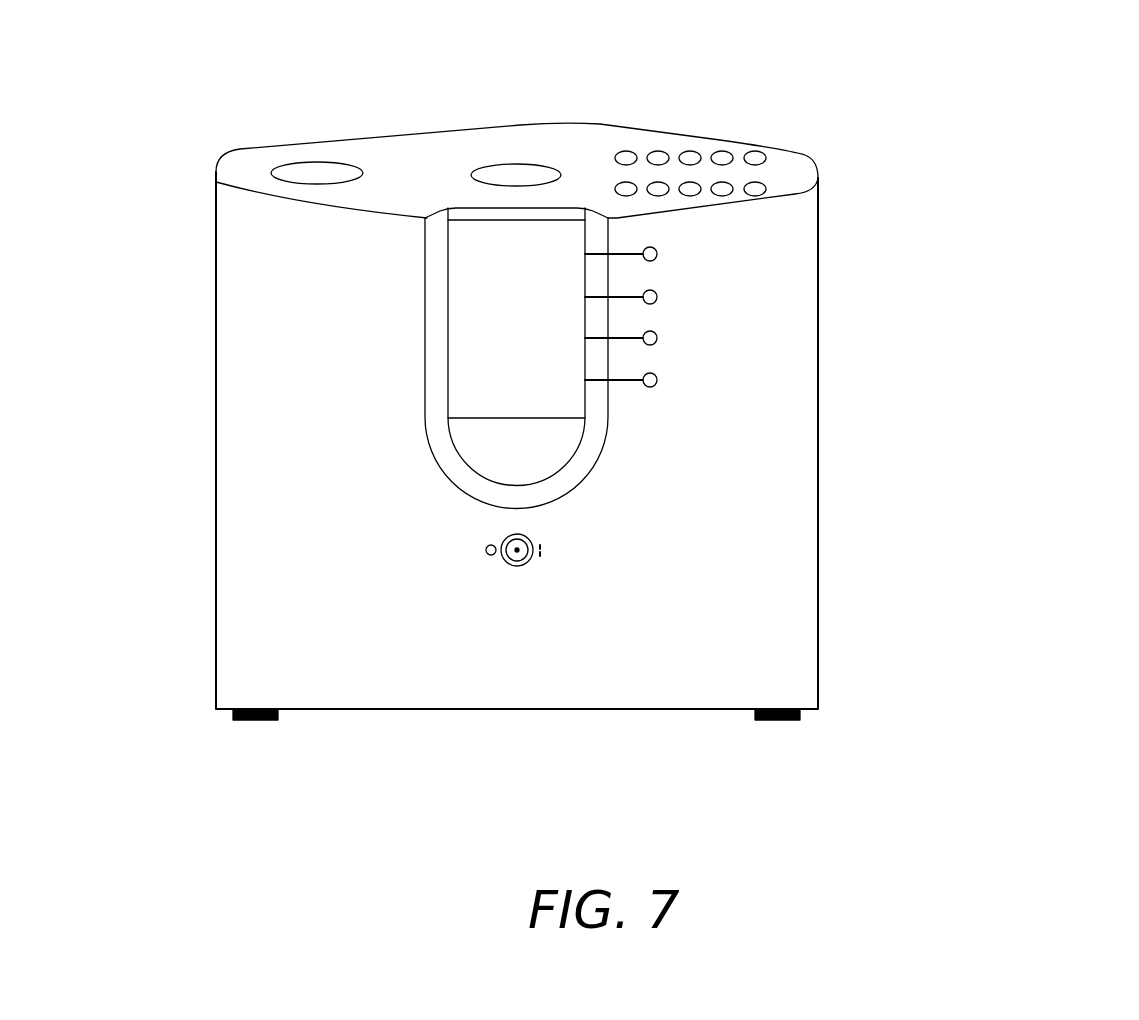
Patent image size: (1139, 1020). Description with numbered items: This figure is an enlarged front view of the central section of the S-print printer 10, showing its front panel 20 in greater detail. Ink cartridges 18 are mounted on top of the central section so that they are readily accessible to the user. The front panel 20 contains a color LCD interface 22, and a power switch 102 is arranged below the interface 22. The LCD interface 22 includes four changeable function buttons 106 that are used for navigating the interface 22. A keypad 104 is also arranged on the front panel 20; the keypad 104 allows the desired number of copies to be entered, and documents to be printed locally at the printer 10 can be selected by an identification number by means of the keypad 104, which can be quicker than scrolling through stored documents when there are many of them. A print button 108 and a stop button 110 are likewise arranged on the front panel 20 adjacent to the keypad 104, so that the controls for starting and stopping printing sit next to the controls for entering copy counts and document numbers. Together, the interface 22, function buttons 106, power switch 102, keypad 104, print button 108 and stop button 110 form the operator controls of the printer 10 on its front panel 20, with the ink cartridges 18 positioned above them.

The S-print printer 10 is at (982, 348).
The ink cartridges 18 is at (774, 111).
The front panel 20 is at (775, 640).
The color LCD interface 22 is at (575, 311).
The power switch 102 is at (528, 562).
The keypad 104 is at (772, 180).
The changeable function buttons 106 is at (658, 250).
The print button 108 is at (512, 172).
The stop button 110 is at (305, 173).